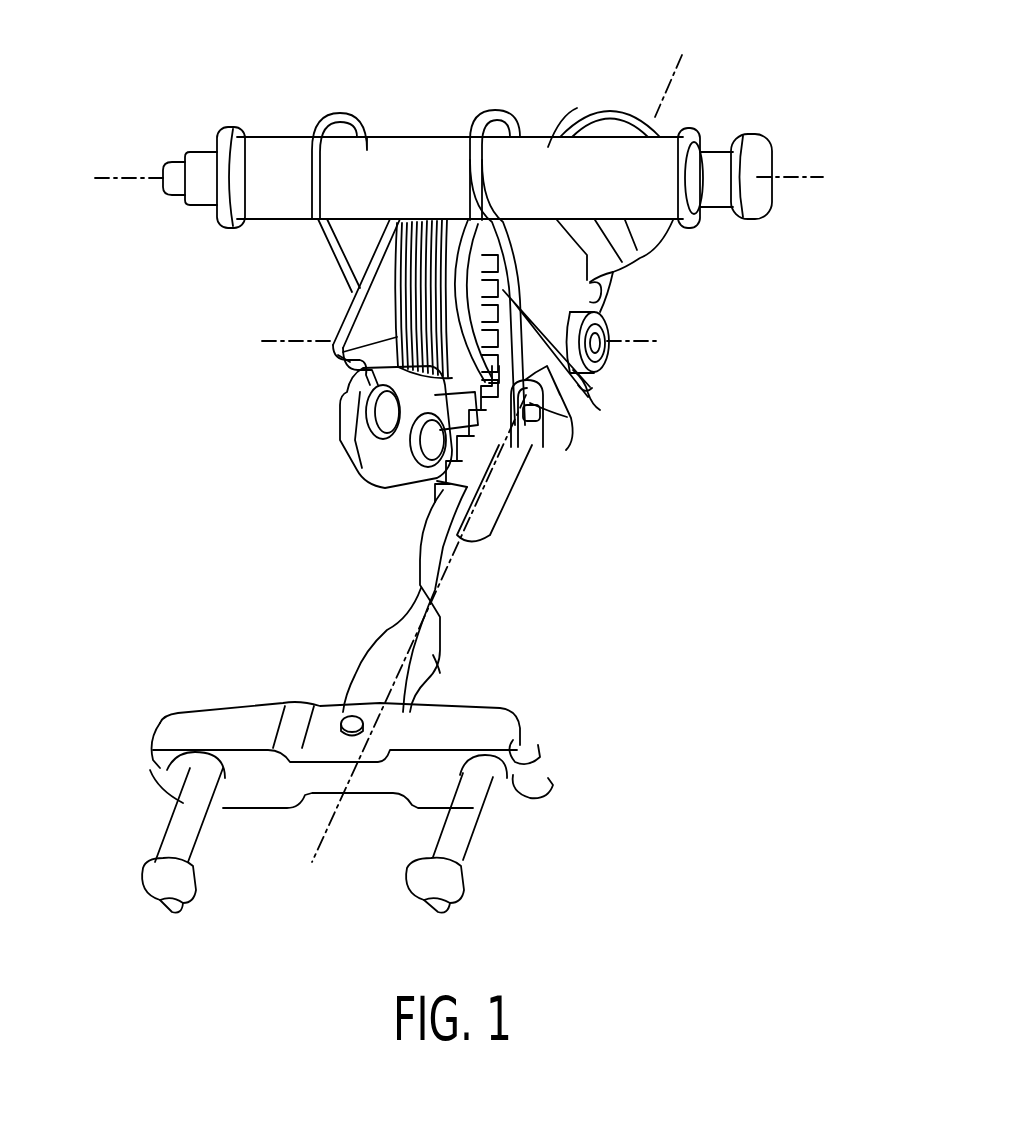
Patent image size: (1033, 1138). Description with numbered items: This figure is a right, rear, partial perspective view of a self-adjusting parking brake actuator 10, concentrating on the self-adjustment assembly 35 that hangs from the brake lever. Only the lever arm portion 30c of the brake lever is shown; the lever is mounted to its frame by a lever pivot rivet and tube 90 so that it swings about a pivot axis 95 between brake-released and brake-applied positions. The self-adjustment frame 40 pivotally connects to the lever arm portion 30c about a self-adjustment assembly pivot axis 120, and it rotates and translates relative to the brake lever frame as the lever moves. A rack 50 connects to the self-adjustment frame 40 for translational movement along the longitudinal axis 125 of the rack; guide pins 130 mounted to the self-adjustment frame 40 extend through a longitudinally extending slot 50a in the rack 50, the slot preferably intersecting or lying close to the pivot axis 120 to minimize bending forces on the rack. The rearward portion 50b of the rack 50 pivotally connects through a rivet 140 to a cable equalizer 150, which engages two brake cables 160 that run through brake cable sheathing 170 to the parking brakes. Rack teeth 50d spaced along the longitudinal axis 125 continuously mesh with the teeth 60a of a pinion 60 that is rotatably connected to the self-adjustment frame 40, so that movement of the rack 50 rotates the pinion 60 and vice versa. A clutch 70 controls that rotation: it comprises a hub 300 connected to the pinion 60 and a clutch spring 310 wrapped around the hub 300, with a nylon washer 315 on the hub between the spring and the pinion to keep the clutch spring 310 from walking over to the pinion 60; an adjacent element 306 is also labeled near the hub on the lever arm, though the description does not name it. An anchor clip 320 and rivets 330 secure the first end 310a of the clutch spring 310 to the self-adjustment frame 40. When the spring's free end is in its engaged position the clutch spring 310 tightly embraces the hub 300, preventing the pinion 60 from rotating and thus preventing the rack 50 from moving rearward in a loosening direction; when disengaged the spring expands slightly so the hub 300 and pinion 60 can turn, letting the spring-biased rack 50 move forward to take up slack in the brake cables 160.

The self-adjusting parking brake actuator 10 is at (250, 88).
The lever arm portion 30c is at (572, 288).
The self-adjustment assembly 35 is at (590, 418).
The self-adjustment frame 40 is at (568, 405).
The rack 50 is at (420, 557).
The longitudinally extending slot 50a is at (477, 523).
The rearward portion 50b is at (440, 673).
The rack teeth 50d is at (436, 483).
The pinion 60 is at (597, 343).
The pinion teeth 60a is at (580, 393).
The clutch 70 is at (415, 279).
The lever pivot rivet and tube 90 is at (758, 160).
The pivot axis 95 is at (818, 180).
The self-adjustment assembly pivot axis 120 is at (262, 338).
The longitudinal axis 125 is at (343, 806).
The guide pins 130 is at (548, 442).
The rivet 140 is at (350, 717).
The cable equalizer 150 is at (503, 713).
The brake cables 160 is at (170, 827).
The brake cable sheathing 170 is at (175, 887).
The hub 300 is at (432, 299).
The upper bracket 306 is at (548, 145).
The clutch spring 310 is at (417, 251).
The first end 310a is at (337, 351).
The nylon washer 315 is at (453, 250).
The anchor clip 320 is at (372, 466).
The rivets 330 is at (420, 440).